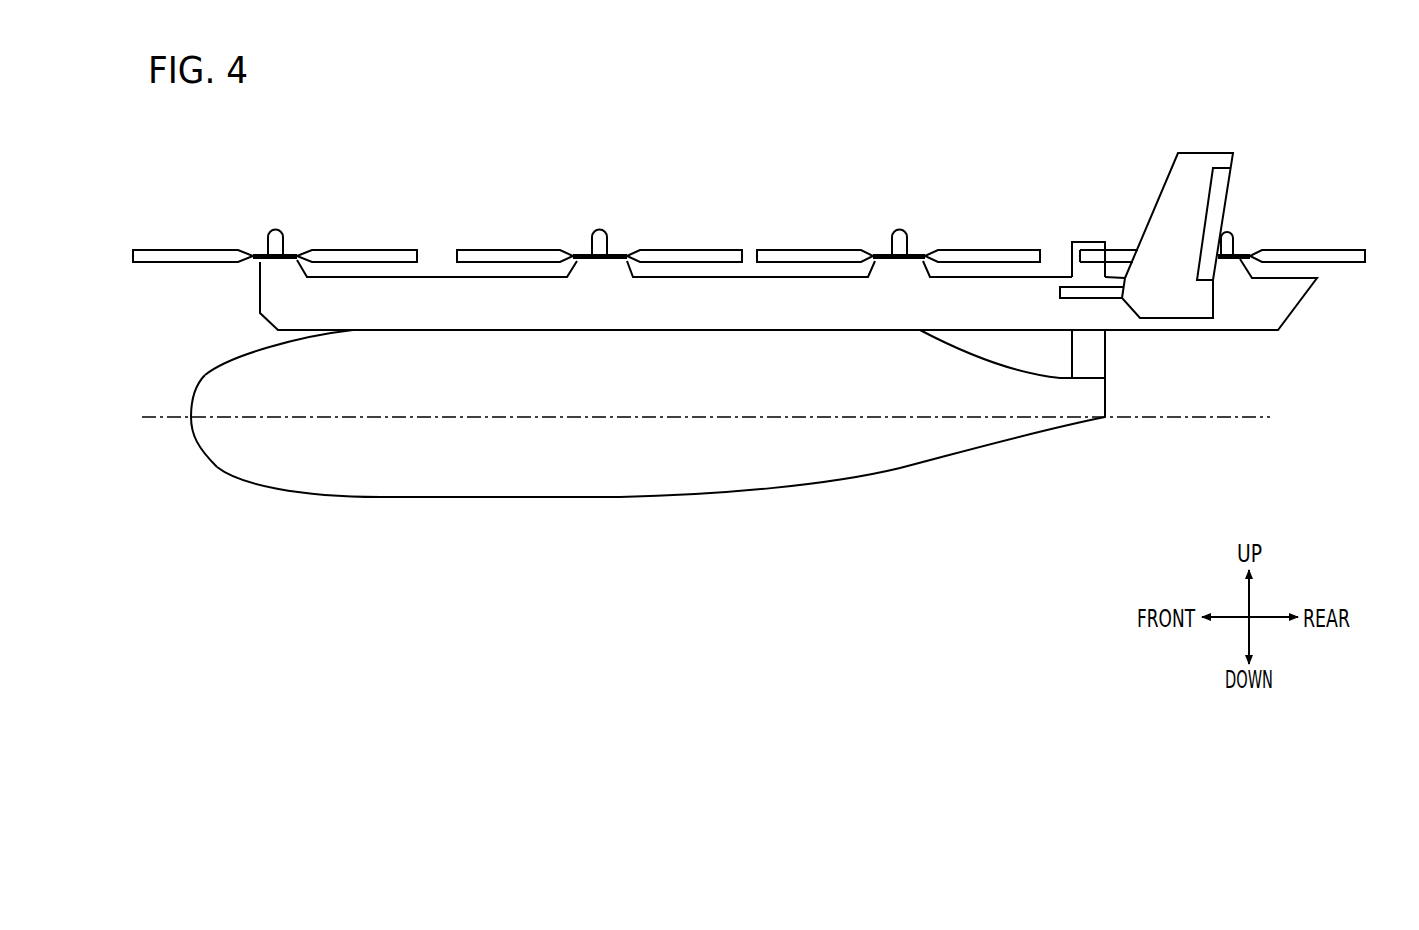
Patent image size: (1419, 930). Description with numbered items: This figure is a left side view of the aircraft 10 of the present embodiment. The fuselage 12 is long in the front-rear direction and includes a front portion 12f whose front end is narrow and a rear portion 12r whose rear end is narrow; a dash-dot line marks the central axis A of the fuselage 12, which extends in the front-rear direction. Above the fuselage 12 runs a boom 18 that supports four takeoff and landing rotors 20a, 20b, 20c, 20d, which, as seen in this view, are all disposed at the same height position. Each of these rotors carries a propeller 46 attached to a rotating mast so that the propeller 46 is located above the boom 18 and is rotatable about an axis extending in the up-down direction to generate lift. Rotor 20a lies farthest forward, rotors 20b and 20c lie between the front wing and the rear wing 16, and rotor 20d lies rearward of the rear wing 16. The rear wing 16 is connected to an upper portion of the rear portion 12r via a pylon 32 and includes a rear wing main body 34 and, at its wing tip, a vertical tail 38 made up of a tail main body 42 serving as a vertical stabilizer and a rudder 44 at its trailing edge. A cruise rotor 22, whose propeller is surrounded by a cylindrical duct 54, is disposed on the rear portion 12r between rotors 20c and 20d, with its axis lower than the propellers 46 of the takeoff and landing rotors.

The aircraft 10 is at (520, 130).
The fuselage 12 is at (634, 450).
The front portion 12f is at (223, 442).
The rear portion 12r is at (1002, 427).
The rear wing 16 is at (1162, 322).
The boom 18 is at (272, 298).
The takeoff and landing rotor 20a is at (290, 228).
The takeoff and landing rotor 20b is at (613, 228).
The takeoff and landing rotor 20c is at (915, 228).
The takeoff and landing rotor 20d is at (1237, 230).
The cruise rotor 22 is at (1078, 234).
The pylon 32 is at (987, 352).
The rear wing main body 34 is at (1068, 291).
The vertical tail 38 is at (1200, 145).
The tail main body 42 is at (1182, 177).
The rudder 44 is at (1212, 222).
The propeller 46 is at (370, 250).
The cylindrical duct 54 is at (1093, 242).
The central axis A is at (697, 417).